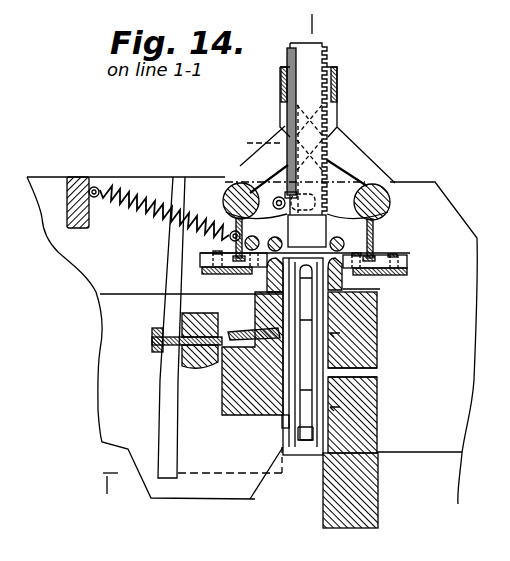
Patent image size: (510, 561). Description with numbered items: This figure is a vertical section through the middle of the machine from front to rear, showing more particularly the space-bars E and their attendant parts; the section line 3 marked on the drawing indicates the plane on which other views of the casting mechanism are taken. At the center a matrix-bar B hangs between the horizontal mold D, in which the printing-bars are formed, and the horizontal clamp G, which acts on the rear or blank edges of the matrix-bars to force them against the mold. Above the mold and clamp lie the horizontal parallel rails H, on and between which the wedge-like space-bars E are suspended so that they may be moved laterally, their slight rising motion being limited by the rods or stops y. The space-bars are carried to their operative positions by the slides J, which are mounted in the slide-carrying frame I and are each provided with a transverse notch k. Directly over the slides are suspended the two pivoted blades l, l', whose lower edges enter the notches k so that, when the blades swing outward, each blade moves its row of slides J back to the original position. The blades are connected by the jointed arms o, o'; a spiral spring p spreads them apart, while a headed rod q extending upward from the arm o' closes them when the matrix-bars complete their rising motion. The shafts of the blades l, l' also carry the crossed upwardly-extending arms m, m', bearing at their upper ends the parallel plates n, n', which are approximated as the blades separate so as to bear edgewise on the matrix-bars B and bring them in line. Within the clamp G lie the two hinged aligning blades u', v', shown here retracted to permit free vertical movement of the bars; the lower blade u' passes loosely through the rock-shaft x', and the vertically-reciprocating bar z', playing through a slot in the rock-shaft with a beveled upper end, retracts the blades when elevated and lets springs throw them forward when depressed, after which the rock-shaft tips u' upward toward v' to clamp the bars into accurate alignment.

The section line 3 3 is at (205, 256).
The spiral spring p is at (136, 217).
The headed rod q is at (255, 160).
The matrix-bars B is at (307, 145).
The parallel plate n is at (344, 84).
The parallel plate n' is at (274, 84).
The upwardly-extending arm m is at (361, 156).
The upwardly-extending arm m' is at (264, 159).
The arm o is at (342, 206).
The arm o' is at (271, 204).
The pivoted blade l is at (373, 222).
The pivoted blade l' is at (245, 222).
The rods or stops y is at (344, 232).
The slides J is at (215, 261).
The transverse notch k is at (230, 268).
The slide-carrying frame I is at (212, 267).
The horizontal parallel rails H is at (267, 283).
The horizontal clamp G is at (252, 353).
The upper aligning blade v' is at (254, 323).
The lower aligning blade u' is at (175, 346).
The rock-shaft x' is at (200, 350).
The vertically-reciprocating bar z' is at (170, 327).
The space-bars E is at (302, 356).
The mold D is at (350, 410).